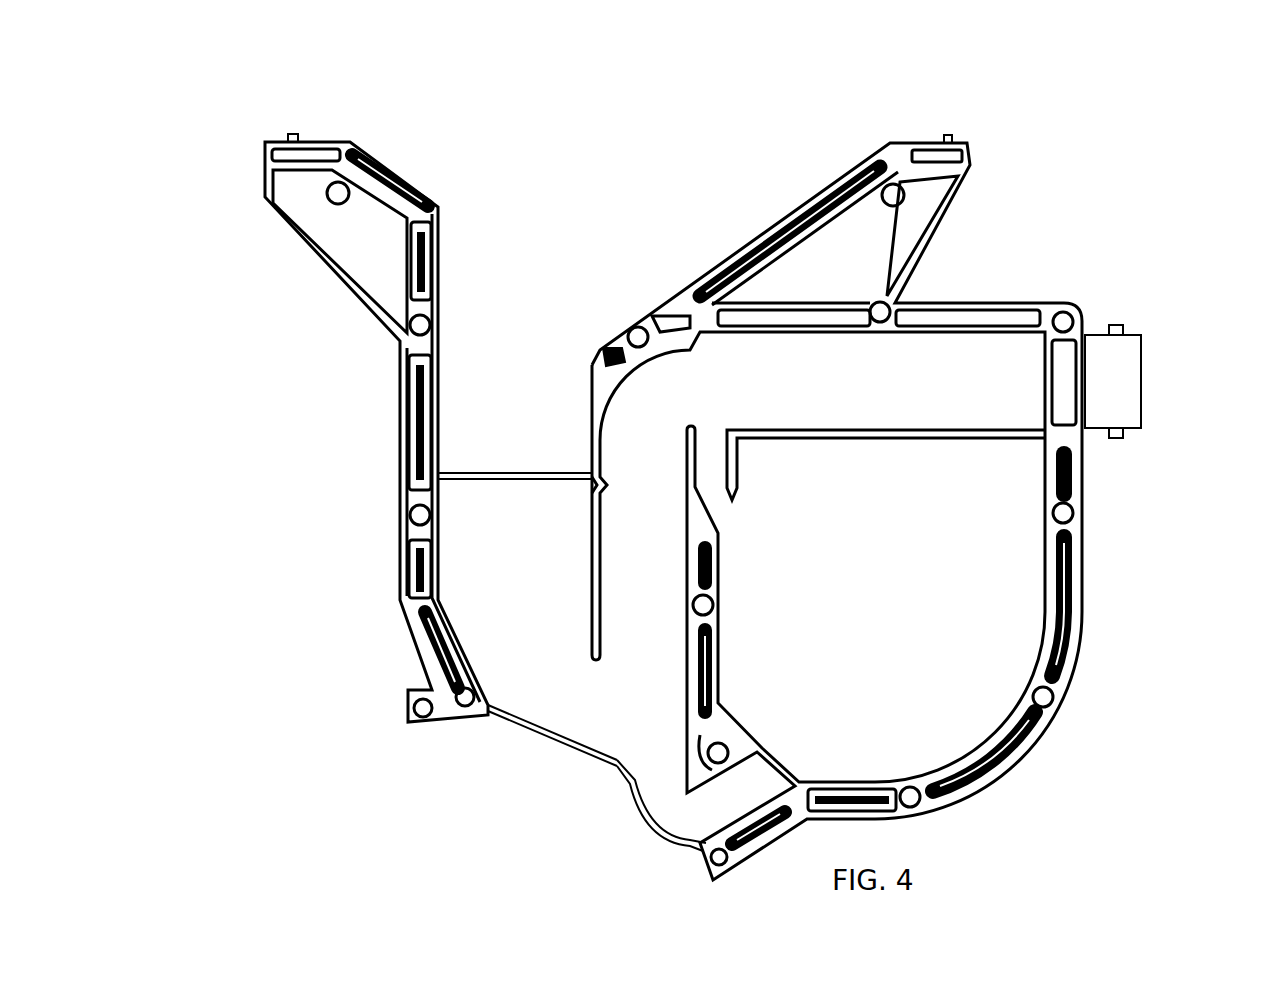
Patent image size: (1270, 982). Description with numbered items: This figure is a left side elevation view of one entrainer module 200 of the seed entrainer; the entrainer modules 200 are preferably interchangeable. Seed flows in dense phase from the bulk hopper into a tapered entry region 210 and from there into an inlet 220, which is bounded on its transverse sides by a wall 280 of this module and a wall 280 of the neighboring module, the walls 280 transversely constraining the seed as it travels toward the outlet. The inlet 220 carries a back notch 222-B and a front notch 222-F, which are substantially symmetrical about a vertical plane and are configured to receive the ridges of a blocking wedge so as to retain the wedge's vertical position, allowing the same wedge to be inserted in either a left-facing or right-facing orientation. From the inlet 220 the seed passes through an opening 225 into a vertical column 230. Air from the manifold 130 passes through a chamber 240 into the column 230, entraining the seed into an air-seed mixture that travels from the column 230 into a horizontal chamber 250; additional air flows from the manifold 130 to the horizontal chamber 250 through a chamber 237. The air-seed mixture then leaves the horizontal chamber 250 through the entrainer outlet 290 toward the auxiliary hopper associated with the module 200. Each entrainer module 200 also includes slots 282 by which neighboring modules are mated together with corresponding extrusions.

The entrainer module 200 is at (186, 182).
The tapered entry region 210 is at (641, 205).
The inlet 220 is at (505, 590).
The front notch 222-F is at (440, 487).
The back notch 222-B is at (593, 488).
The opening 225 is at (601, 712).
The vertical column 230 is at (656, 545).
The chamber 237 is at (715, 497).
The chamber 240 is at (683, 810).
The horizontal chamber 250 is at (937, 378).
The wall 280 is at (806, 385).
The slot 282 is at (903, 152).
The entrainer outlet 290 is at (1143, 385).
The manifold 130 is at (955, 666).